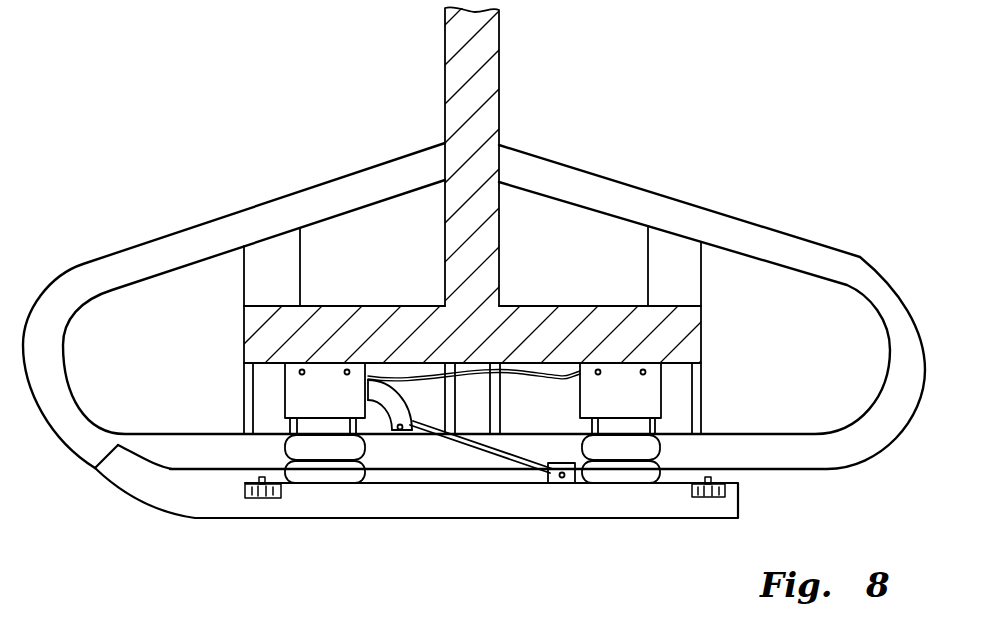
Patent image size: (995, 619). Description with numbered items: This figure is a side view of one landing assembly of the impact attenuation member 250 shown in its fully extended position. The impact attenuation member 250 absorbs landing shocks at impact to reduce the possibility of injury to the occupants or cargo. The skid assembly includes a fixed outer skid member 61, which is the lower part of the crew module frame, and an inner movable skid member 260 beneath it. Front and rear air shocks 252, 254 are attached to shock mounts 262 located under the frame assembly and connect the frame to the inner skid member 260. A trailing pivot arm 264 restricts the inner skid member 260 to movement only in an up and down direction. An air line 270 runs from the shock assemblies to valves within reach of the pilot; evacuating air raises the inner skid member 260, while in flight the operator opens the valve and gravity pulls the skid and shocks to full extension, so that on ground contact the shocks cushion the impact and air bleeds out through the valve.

The impact attenuation member 250 is at (713, 132).
The fixed outer skid member 61 is at (792, 245).
The air line 270 is at (523, 373).
The shock mount 262 is at (293, 402).
The front air shock 252 is at (337, 477).
The rear air shock 254 is at (652, 443).
The trailing pivot arm 264 is at (452, 447).
The inner movable skid member 260 is at (632, 508).